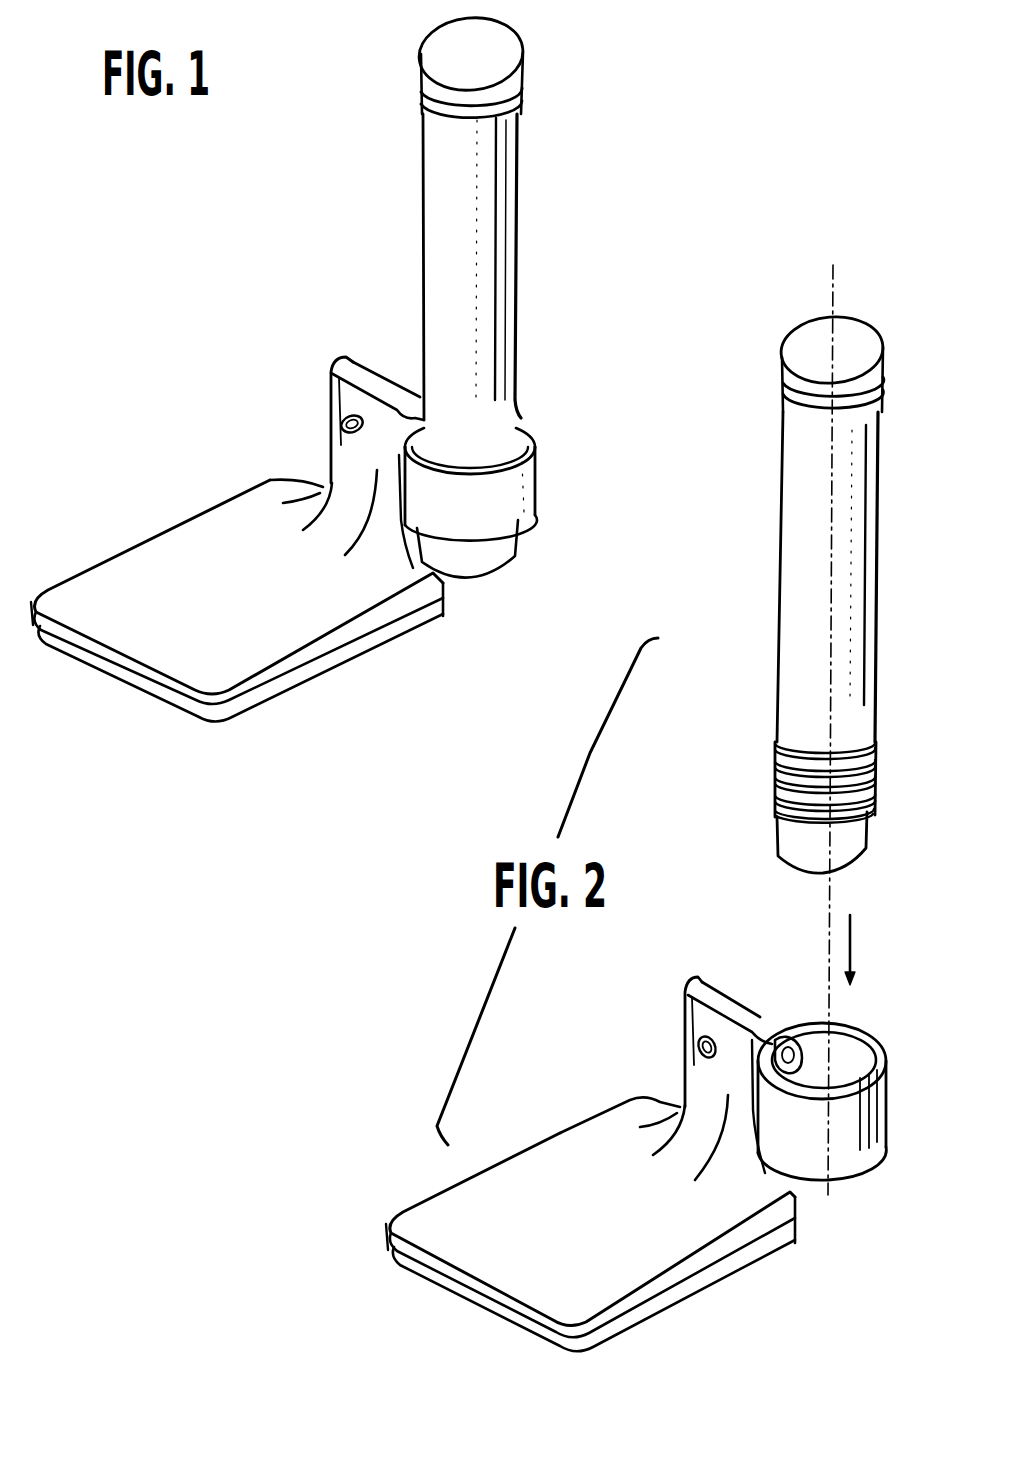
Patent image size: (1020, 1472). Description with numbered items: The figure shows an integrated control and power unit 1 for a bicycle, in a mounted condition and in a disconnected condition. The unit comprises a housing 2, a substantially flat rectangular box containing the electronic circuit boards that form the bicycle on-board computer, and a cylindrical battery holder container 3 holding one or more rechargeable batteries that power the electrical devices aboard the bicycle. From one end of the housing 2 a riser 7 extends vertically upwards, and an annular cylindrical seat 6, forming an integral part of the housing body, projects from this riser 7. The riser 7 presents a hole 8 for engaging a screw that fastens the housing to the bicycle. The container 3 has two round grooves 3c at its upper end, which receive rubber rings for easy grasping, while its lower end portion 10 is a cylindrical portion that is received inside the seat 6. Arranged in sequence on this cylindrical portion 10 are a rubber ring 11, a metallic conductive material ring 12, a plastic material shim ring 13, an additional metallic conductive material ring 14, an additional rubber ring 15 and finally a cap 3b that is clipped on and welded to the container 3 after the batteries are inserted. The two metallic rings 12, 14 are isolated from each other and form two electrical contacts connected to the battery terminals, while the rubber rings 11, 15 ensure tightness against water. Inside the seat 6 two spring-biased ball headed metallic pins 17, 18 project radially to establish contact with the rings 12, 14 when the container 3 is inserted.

In FIG. 1, the integrated control and power unit 1 is at (299, 350).
In FIG. 1, the housing 2 is at (375, 628).
In FIG. 2, the housing 2 is at (753, 1284).
In FIG. 1, the battery holder container 3 is at (500, 170).
In FIG. 2, the battery holder container 3 is at (766, 543).
In FIG. 2, the cap 3b is at (860, 860).
In FIG. 2, the round grooves 3c is at (778, 375).
In FIG. 1, the annular cylindrical seat 6 is at (514, 482).
In FIG. 2, the annular cylindrical seat 6 is at (847, 1173).
In FIG. 1, the riser 7 is at (330, 458).
In FIG. 2, the riser 7 is at (683, 1080).
In FIG. 1, the hole 8 is at (353, 363).
In FIG. 2, the hole 8 is at (678, 998).
In FIG. 2, the lower end portion 10 is at (888, 757).
In FIG. 2, the rubber ring 11 is at (773, 742).
In FIG. 2, the metallic conductive material ring 12 is at (775, 752).
In FIG. 2, the plastic material shim ring 13 is at (775, 768).
In FIG. 2, the additional metallic conductive material ring 14 is at (775, 786).
In FIG. 2, the additional rubber ring 15 is at (777, 813).
In FIG. 2, the ball headed metallic pin 17 is at (802, 1030).
In FIG. 2, the ball headed metallic pin 18 is at (800, 1070).